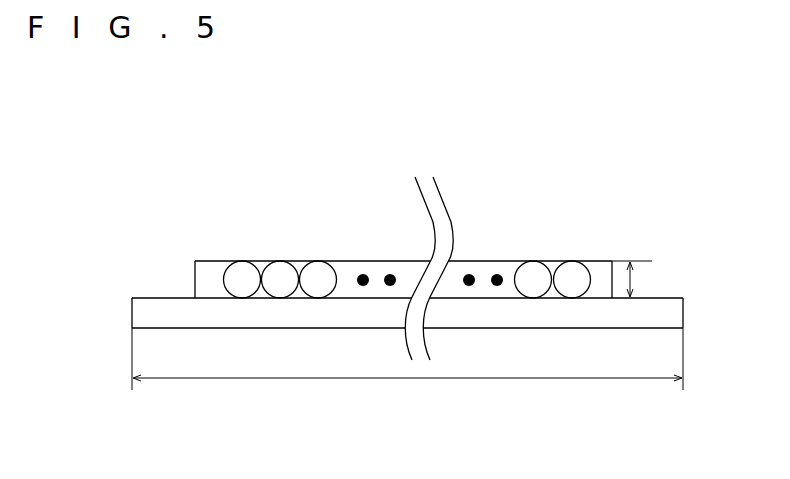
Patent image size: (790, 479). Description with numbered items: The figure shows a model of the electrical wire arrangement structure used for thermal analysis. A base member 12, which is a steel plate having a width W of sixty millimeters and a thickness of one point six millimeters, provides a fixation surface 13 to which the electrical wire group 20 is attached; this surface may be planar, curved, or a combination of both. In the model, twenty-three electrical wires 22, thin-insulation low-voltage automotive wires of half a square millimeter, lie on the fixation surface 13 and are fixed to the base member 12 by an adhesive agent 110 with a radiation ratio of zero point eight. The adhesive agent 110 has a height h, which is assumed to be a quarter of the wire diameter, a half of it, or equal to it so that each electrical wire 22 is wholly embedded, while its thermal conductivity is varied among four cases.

The base member 12 is at (683, 313).
The fixation surface 13 is at (675, 298).
The electrical wire group 20 is at (216, 280).
The electrical wire 22 is at (320, 268).
The adhesive agent 110 is at (210, 272).
The height of the adhesive agent h is at (633, 280).
The width of the base member W is at (409, 383).